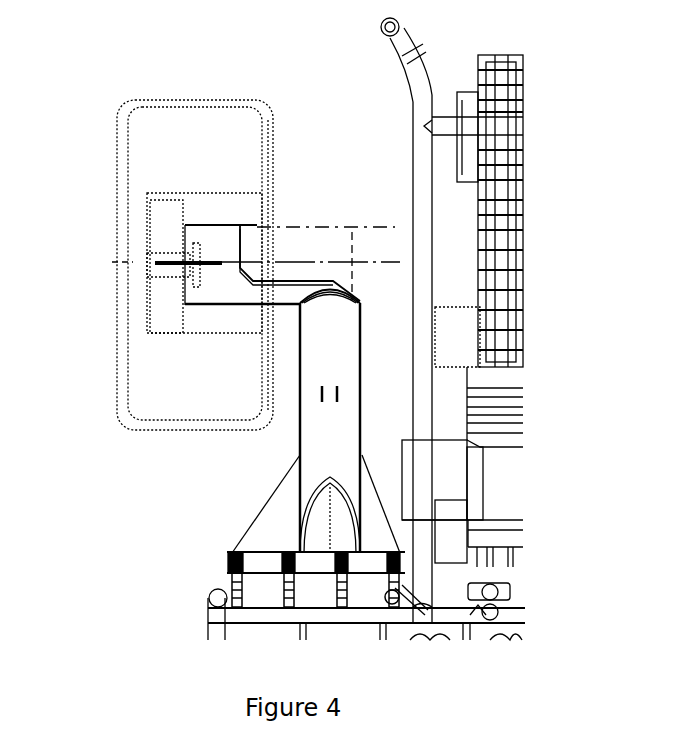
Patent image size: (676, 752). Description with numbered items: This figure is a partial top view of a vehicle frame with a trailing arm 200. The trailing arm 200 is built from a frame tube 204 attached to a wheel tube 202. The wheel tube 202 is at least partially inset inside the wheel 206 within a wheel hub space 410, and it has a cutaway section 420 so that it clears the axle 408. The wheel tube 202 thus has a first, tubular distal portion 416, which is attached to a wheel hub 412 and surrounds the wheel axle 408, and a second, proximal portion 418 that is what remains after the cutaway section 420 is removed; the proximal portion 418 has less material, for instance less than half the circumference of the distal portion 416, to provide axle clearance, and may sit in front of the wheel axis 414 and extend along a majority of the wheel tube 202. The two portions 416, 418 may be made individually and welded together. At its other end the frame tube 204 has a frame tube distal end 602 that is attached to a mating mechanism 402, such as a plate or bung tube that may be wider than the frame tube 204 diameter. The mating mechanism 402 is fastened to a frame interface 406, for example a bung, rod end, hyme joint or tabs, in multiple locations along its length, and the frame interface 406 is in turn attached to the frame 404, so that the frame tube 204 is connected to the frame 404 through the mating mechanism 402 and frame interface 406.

The trailing arm 200 is at (290, 447).
The wheel tube 202 is at (293, 282).
The frame tube 204 is at (340, 447).
The wheel 206 is at (178, 80).
The mating mechanism 402 is at (257, 563).
The frame 404 is at (250, 617).
The frame interface 406 is at (228, 585).
The axle 408 is at (345, 240).
The wheel hub space 410 is at (210, 210).
The wheel hub 412 is at (186, 228).
The wheel axis 414 is at (88, 262).
The wheel tube first portion 416 is at (220, 240).
The wheel tube second portion 418 is at (285, 293).
The cutaway section 420 is at (346, 214).
The frame tube distal end 602 is at (317, 563).